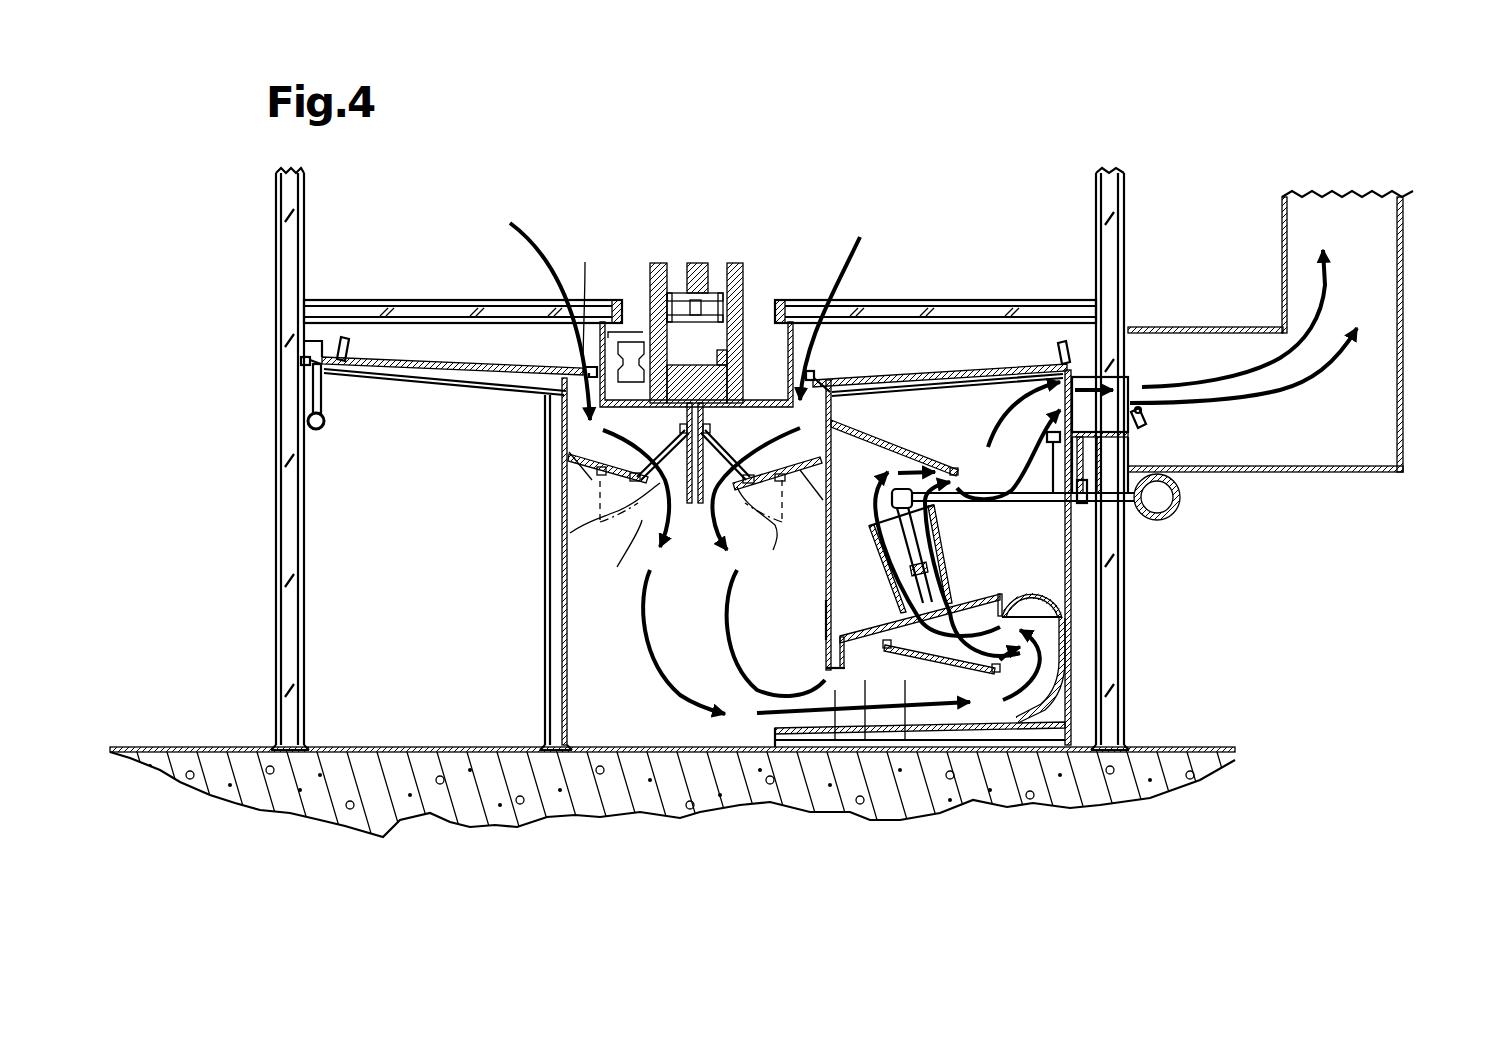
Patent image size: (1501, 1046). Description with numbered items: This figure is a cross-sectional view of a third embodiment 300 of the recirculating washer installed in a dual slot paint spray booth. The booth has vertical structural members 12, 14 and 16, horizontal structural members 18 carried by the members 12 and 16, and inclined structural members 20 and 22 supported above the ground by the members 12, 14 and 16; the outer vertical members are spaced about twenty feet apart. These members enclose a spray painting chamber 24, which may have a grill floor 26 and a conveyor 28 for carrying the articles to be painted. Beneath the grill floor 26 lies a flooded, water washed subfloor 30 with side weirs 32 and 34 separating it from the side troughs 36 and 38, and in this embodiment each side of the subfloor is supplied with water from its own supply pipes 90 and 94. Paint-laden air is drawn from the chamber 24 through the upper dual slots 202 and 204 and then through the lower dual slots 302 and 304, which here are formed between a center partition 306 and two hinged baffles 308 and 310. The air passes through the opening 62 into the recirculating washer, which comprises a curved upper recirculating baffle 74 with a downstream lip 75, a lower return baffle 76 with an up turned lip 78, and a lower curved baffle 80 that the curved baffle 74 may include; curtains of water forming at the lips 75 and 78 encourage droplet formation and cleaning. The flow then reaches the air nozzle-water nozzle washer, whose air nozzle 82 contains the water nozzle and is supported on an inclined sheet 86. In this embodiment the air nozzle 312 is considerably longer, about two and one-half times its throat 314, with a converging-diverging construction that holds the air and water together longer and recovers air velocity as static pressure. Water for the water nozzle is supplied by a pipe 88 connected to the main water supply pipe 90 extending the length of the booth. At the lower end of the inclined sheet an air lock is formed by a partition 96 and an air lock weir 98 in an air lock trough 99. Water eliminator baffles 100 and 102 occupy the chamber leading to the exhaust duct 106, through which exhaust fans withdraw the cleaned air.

The vertical structural member 12 is at (1111, 252).
The vertical structural member 14 is at (560, 580).
The vertical structural member 16 is at (286, 578).
The horizontal structural member 18 is at (423, 312).
The inclined structural member 20 is at (972, 372).
The inclined structural member 22 is at (437, 363).
The spray painting chamber 24 is at (928, 220).
The grill floor 26 is at (348, 300).
The conveyor 28 is at (650, 285).
The water washed subfloor 30 is at (505, 359).
The side weir 32 is at (348, 347).
The side weir 34 is at (1052, 358).
The side trough 36 is at (322, 343).
The side trough 38 is at (1082, 357).
The opening 62 is at (825, 684).
The upper recirculating baffle 74 is at (1052, 598).
The downstream lip 75 is at (1062, 627).
The lower return baffle 76 is at (953, 680).
The up turned lip 78 is at (998, 680).
The lower curved baffle 80 is at (1055, 710).
The air nozzle 82 is at (1071, 547).
The inclined sheet 86 is at (960, 570).
The pipe 88 is at (1027, 498).
The main water supply pipe 90 is at (308, 422).
The connecting pipe 94 is at (313, 386).
The partition 96 is at (835, 690).
The air lock weir 98 is at (905, 680).
The air lock trough 99 is at (865, 680).
The water eliminator baffle 100 is at (945, 440).
The water eliminator baffle 102 is at (1055, 438).
The exhaust duct 106 is at (1375, 395).
The upper dual slot 202 is at (590, 295).
The upper dual slot 204 is at (810, 373).
The recirculating washer 300 is at (1134, 657).
The lower dual slot 302 is at (617, 567).
The lower dual slot 304 is at (722, 535).
The center partition 306 is at (690, 507).
The hinged baffle 308 is at (600, 496).
The hinged baffle 310 is at (765, 538).
The air nozzle 312 is at (828, 541).
The throat 314 is at (830, 609).